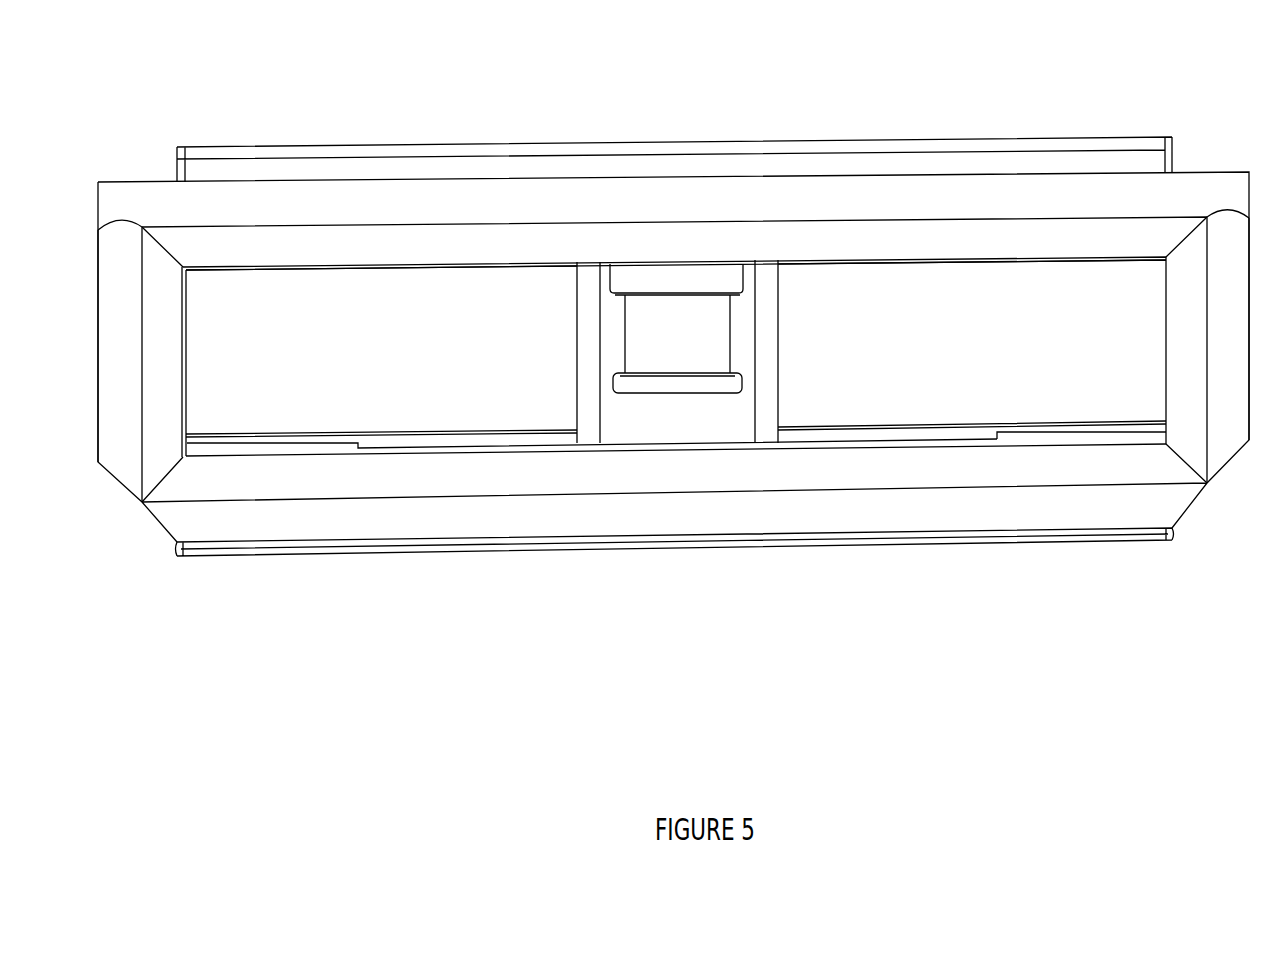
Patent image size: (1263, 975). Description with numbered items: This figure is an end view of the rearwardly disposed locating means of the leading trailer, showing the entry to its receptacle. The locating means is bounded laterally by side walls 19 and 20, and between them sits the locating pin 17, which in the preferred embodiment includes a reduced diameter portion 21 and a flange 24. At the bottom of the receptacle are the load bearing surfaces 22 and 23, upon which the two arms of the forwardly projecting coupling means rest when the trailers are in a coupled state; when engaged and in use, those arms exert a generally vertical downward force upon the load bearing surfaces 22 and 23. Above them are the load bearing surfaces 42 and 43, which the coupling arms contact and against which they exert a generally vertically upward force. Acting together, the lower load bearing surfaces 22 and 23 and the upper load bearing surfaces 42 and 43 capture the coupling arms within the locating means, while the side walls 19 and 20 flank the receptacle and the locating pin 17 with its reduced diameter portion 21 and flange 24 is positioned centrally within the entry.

The locating pin 17 is at (720, 427).
The side wall 19 is at (1073, 295).
The side wall 20 is at (305, 298).
The reduced diameter portion 21 is at (703, 300).
The load bearing surface 22 is at (965, 320).
The load bearing surface 23 is at (267, 372).
The flange 24 is at (652, 395).
The load bearing surface 42 is at (1010, 327).
The load bearing surface 43 is at (387, 337).